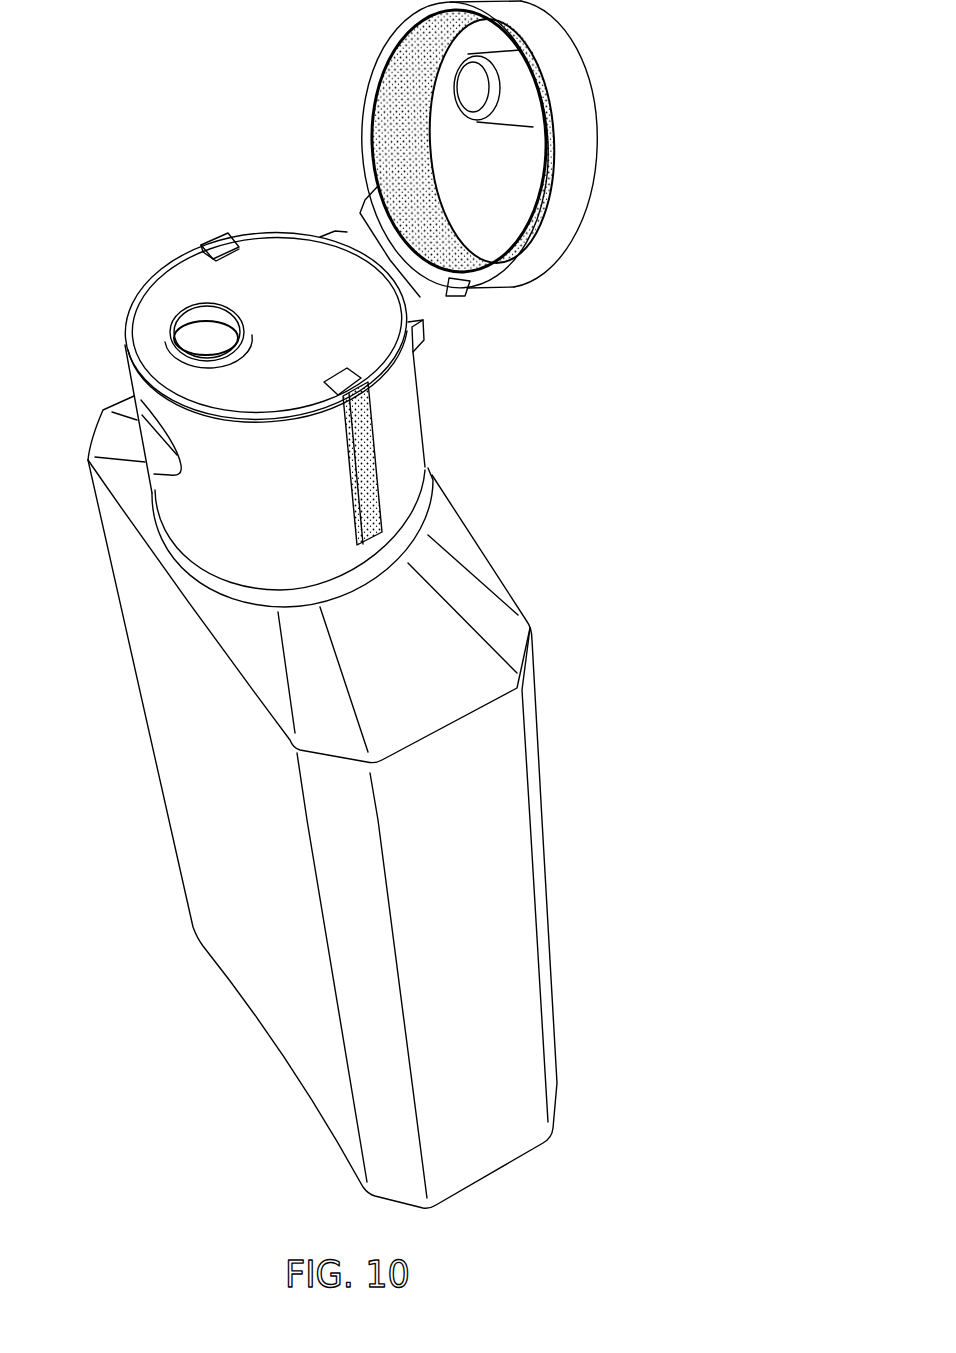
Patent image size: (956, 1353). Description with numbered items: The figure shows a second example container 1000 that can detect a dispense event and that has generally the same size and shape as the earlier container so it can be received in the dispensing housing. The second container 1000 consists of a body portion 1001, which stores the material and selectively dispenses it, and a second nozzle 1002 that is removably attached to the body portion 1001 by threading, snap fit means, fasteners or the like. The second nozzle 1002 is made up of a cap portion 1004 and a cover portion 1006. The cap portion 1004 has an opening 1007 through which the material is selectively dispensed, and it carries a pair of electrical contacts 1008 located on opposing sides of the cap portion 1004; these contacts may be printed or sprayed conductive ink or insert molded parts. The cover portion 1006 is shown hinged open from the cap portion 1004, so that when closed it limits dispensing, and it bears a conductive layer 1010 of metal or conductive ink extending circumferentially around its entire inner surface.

The second container 1000 is at (93, 134).
The body portion 1001 is at (516, 598).
The second nozzle 1002 is at (125, 331).
The cap portion 1004 is at (409, 400).
The cover portion 1006 is at (548, 257).
The opening 1007 is at (196, 345).
The electrical contacts 1008 is at (216, 240).
The conductive layer 1010 is at (393, 125).